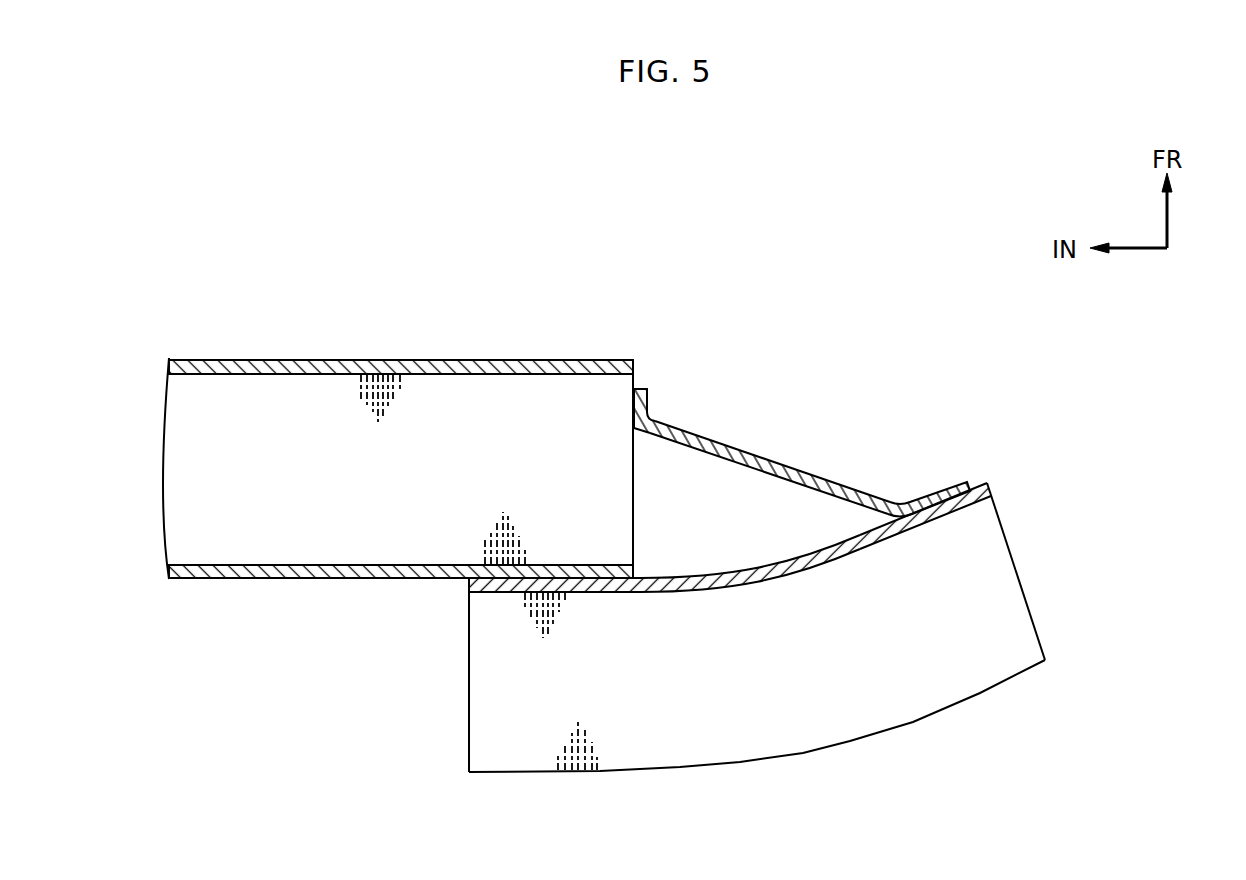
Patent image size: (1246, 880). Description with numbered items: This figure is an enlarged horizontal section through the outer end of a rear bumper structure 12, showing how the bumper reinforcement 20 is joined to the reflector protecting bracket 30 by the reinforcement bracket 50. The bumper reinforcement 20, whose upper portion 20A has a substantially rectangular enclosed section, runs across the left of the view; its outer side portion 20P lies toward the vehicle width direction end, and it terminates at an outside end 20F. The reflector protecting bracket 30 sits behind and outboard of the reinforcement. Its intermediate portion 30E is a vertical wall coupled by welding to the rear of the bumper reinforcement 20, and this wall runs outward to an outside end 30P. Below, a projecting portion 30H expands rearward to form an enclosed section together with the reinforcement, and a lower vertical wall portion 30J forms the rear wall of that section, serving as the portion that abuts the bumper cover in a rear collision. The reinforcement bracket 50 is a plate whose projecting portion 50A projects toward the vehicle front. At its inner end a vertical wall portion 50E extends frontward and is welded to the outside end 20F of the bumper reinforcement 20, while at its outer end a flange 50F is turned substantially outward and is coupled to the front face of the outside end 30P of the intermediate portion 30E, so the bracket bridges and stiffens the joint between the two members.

The vehicle body structure 12 is at (435, 428).
The bumper reinforcement 20 is at (435, 433).
The upper portion 20A is at (398, 353).
The outer side portion 20P is at (585, 353).
The outside end 20F is at (637, 438).
The reinforcement bracket 50 is at (802, 438).
The vertical wall portion 50E is at (648, 401).
The projecting portion 50A is at (743, 450).
The flange 50F is at (933, 492).
The reflector protecting bracket 30 is at (757, 673).
The intermediate portion 30E is at (623, 596).
The outside end 30P is at (942, 525).
The projecting portion 30H is at (802, 754).
The lower vertical wall portion 30J is at (868, 735).